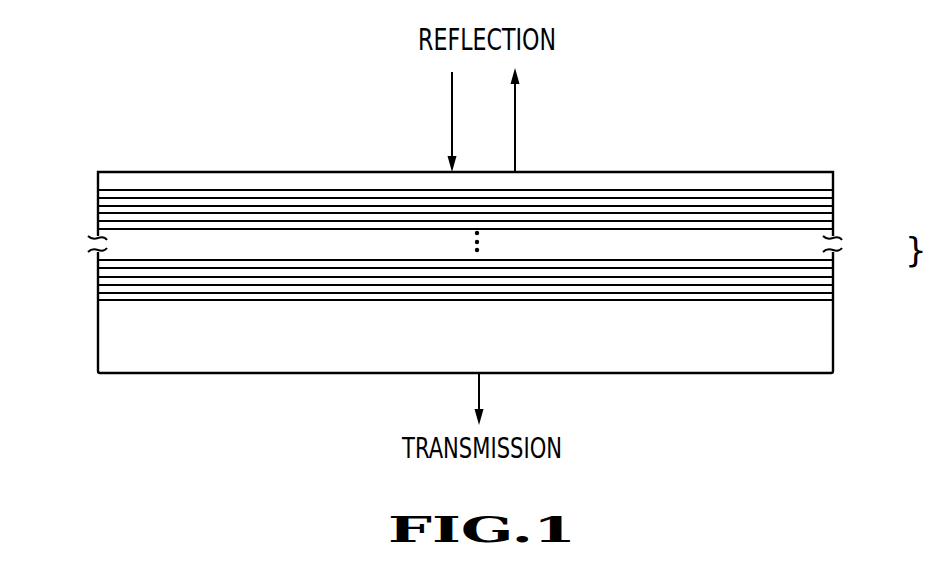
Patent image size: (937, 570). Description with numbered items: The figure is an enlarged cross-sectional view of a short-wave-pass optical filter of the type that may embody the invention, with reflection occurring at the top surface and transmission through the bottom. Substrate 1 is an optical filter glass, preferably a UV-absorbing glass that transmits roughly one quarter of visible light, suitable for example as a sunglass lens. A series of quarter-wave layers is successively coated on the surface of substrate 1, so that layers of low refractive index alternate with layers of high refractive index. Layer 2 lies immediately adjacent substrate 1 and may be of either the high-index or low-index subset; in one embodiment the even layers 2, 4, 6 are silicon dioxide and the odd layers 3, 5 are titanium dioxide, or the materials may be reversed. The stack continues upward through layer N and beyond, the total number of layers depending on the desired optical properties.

The substrate 1 is at (100, 344).
The quarter-wave layer 2 is at (98, 293).
The quarter-wave layer 3 is at (834, 278).
The quarter-wave layer 4 is at (97, 277).
The quarter-wave layer 5 is at (834, 263).
The quarter-wave layer 6 is at (97, 259).
The quarter-wave layer N is at (97, 229).